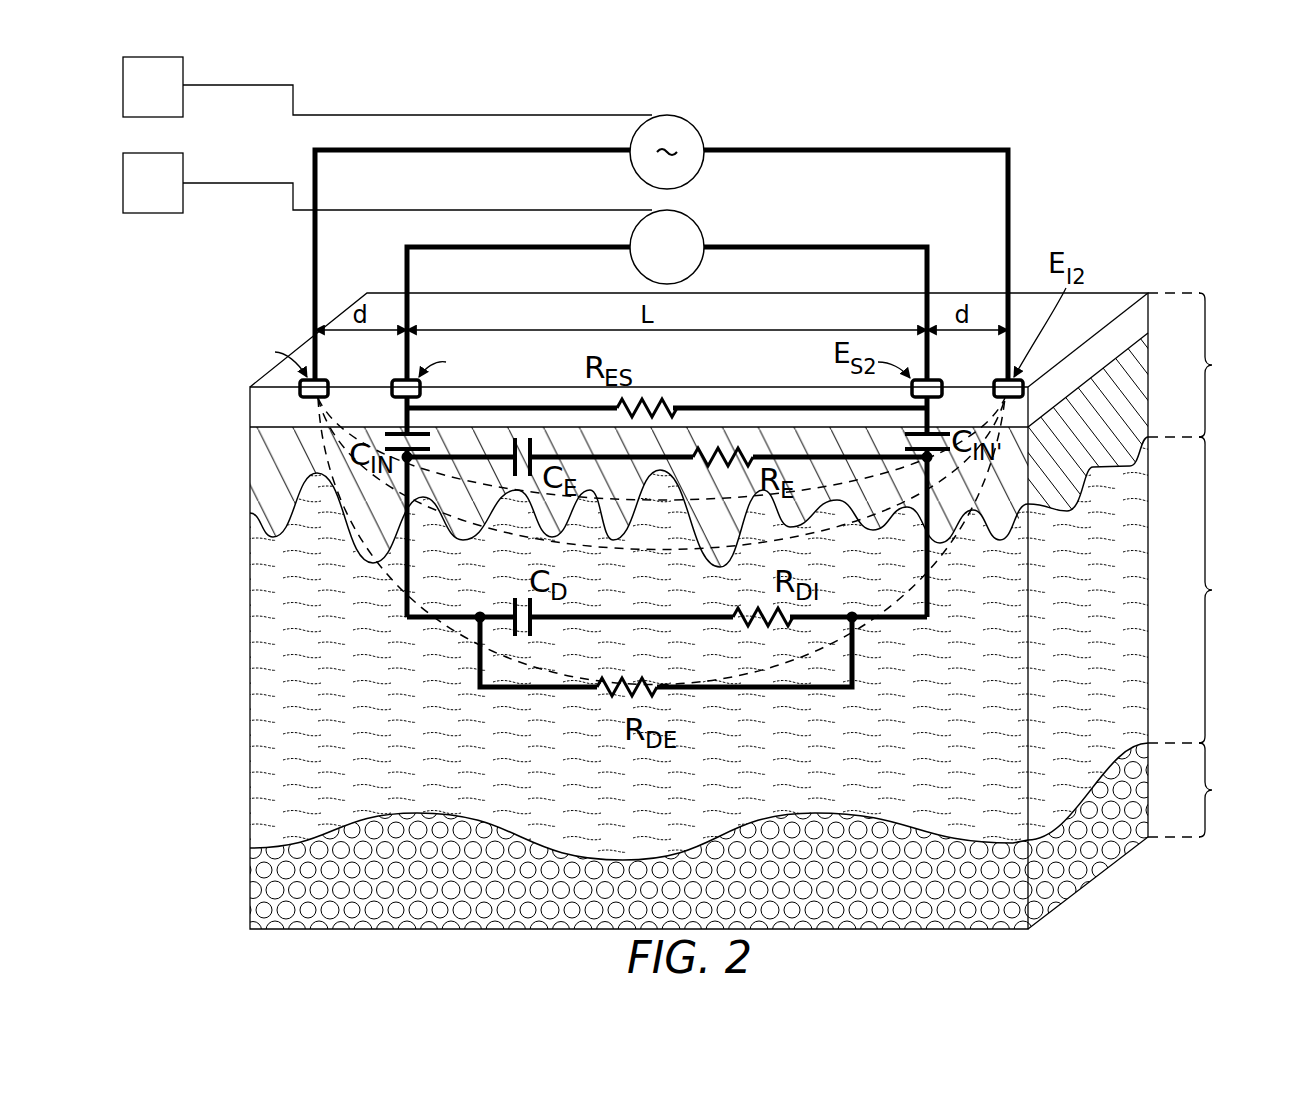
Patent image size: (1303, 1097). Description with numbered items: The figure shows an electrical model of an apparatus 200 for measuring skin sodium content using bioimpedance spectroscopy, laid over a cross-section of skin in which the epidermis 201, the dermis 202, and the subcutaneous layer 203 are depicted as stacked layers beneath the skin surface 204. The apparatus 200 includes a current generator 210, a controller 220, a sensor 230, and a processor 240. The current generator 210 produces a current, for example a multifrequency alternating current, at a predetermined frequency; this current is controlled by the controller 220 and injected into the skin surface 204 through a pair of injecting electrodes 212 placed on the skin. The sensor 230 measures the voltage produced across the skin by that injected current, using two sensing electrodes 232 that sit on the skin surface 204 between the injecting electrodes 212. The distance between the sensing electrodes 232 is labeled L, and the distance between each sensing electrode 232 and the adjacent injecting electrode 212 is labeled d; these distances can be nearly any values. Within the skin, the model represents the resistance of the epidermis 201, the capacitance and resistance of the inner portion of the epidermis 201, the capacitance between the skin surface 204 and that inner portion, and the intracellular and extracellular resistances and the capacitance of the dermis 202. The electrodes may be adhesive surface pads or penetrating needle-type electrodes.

The apparatus 200 is at (1033, 127).
The epidermis 201 is at (755, 430).
The dermis 202 is at (755, 648).
The subcutaneous layer 203 is at (755, 836).
The skin surface 204 is at (1125, 293).
The current generator 210 is at (667, 114).
The injecting electrodes 212 is at (302, 398).
The controller 220 is at (175, 99).
The sensor 230 is at (667, 209).
The sensing electrodes 232 is at (392, 391).
The processor 240 is at (175, 195).